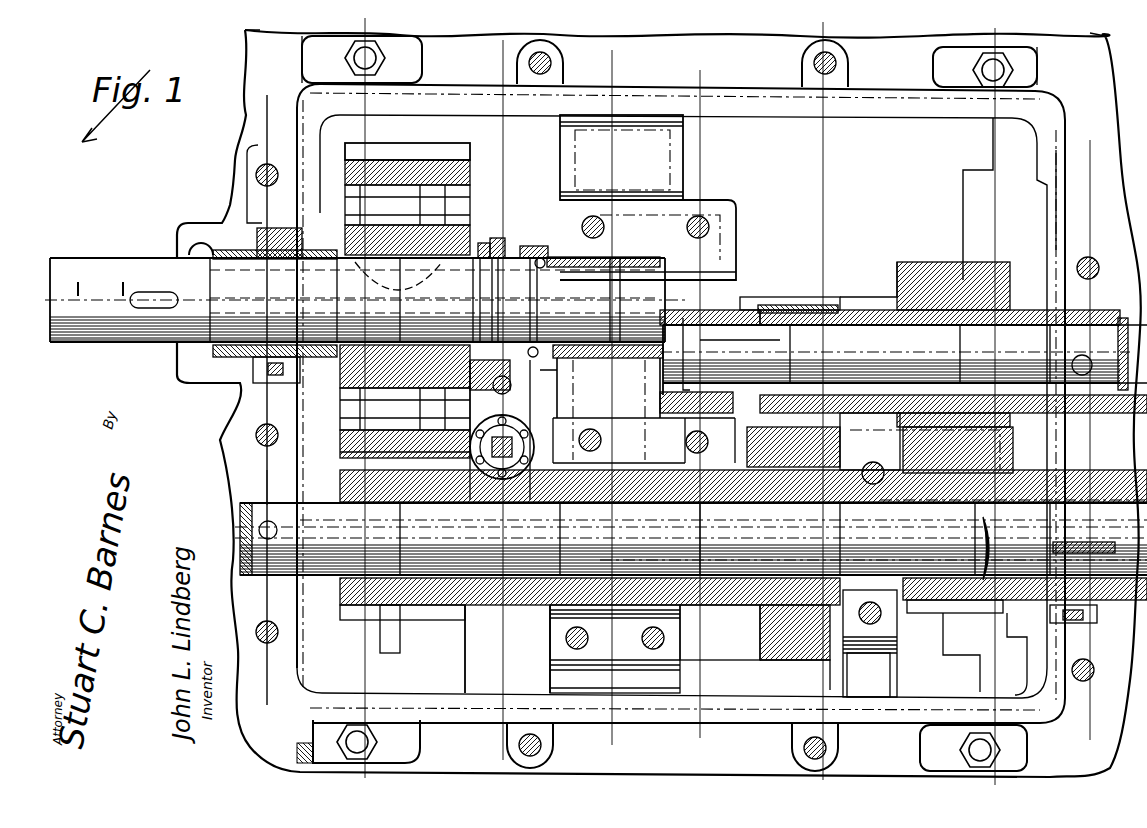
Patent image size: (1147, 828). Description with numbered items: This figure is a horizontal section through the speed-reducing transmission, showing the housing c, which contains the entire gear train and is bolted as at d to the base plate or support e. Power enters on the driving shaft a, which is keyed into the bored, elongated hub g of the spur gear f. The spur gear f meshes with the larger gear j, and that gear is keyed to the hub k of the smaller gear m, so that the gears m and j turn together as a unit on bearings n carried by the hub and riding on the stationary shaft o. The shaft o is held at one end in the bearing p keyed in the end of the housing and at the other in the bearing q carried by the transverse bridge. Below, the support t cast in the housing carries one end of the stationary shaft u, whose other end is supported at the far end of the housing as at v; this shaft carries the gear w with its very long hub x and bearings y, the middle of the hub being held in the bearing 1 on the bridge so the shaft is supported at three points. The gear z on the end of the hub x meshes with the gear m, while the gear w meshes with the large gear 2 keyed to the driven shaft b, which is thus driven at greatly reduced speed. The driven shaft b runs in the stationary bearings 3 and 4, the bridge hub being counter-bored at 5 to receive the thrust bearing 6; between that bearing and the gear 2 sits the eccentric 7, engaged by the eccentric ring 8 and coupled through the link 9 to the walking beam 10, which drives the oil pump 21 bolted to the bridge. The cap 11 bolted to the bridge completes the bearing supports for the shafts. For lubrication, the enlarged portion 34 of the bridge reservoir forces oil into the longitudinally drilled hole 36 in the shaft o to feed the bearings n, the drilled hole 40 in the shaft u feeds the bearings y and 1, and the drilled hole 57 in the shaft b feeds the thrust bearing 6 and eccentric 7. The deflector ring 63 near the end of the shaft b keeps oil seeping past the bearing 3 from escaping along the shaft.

The bearing 1 is at (1137, 370).
The large gear 2 is at (450, 170).
The bearing 3 is at (200, 382).
The bearing 4 is at (550, 250).
The counter-bore 5 is at (530, 243).
The thrust bearing 6 is at (557, 370).
The eccentric 7 is at (479, 245).
The eccentric ring 8 is at (496, 242).
The link 9 is at (273, 111).
The walking beam 10 is at (220, 530).
The cap 11 is at (963, 635).
The pump 21 is at (400, 445).
The enlarged portion of the bridge 34 is at (735, 217).
The longitudinally drilled hole 36 is at (798, 292).
The longitudinally drilled hole 40 is at (285, 485).
The longitudinally drilled hole 57 is at (463, 300).
The deflector ring 63 is at (180, 348).
The driving shaft a is at (1004, 72).
The driven shaft b is at (70, 270).
The housing c is at (1068, 122).
The bolts d is at (385, 63).
The base plate or support e is at (262, 46).
The spur gear f is at (935, 605).
The elongated hub g is at (735, 312).
The larger gear j is at (920, 252).
The hub k is at (870, 292).
The gear m is at (810, 302).
The bearings n is at (757, 307).
The stationary shaft o is at (845, 345).
The bearing p is at (672, 196).
The bearing q is at (1020, 605).
The support t is at (875, 672).
The stationary shaft u is at (530, 587).
The shaft support v is at (248, 577).
The gear w is at (445, 606).
The hub x is at (708, 608).
The bearings y is at (400, 606).
The gear z is at (775, 662).